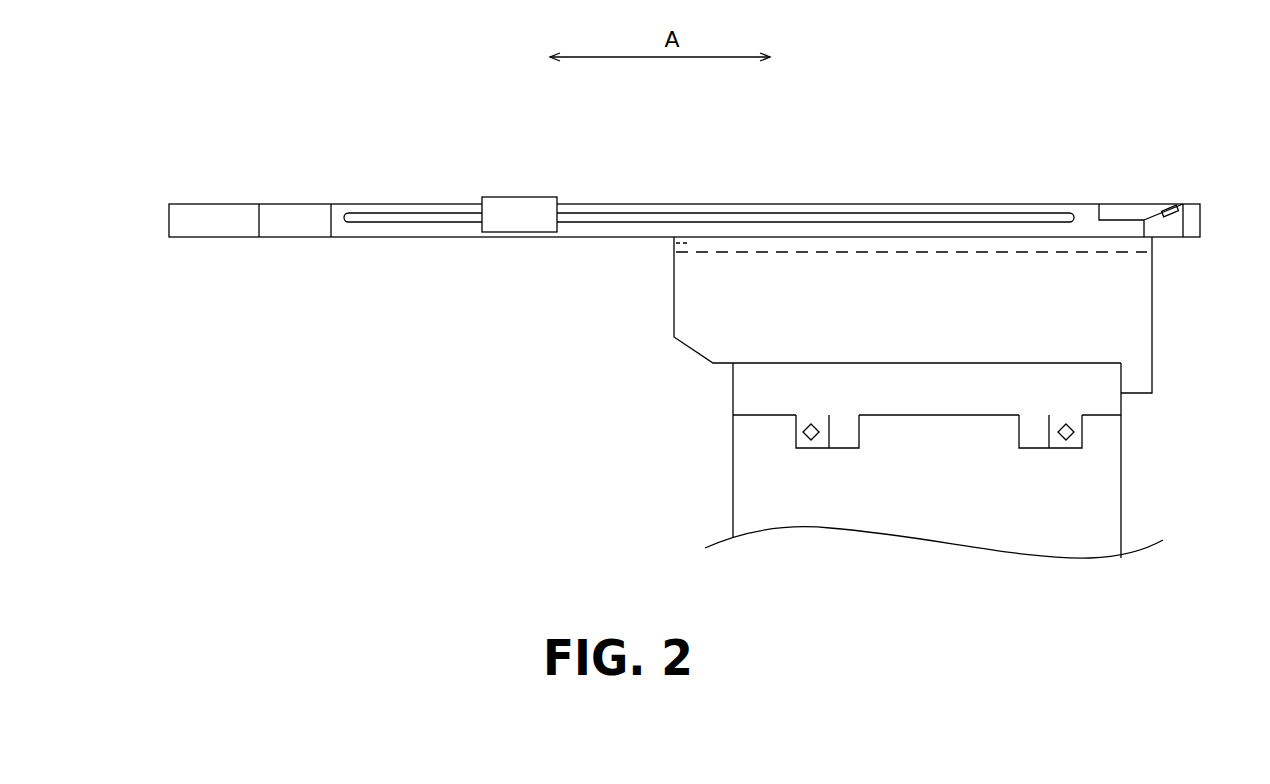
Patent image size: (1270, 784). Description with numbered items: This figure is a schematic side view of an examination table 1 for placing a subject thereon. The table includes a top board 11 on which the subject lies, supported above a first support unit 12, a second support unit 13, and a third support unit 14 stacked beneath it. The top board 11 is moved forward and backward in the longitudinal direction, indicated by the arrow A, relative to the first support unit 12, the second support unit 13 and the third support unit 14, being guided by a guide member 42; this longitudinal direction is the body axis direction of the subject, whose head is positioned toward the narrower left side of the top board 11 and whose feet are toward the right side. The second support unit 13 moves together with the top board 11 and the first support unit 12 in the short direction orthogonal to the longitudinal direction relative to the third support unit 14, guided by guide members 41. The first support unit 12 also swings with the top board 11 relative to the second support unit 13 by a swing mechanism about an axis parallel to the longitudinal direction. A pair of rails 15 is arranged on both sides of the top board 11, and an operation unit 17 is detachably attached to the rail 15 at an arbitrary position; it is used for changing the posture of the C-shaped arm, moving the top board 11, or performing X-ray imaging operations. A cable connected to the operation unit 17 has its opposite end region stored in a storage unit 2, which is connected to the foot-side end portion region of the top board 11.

The examination table 1 is at (703, 294).
The storage unit 2 is at (1124, 210).
The top board 11 is at (774, 204).
The first support unit 12 is at (1135, 292).
The second support unit 13 is at (1100, 380).
The third support unit 14 is at (1098, 483).
The rail 15 is at (423, 222).
The operation unit 17 is at (518, 212).
The guide member 41 is at (817, 448).
The guide member 42 is at (676, 243).